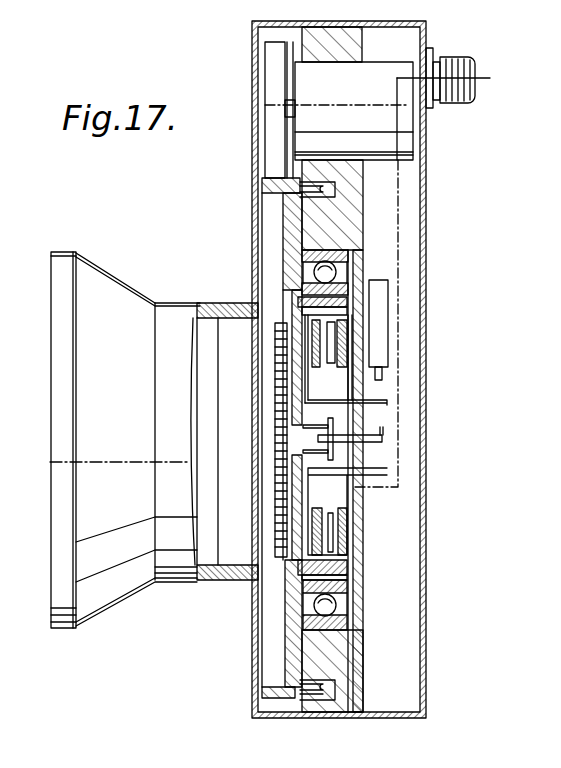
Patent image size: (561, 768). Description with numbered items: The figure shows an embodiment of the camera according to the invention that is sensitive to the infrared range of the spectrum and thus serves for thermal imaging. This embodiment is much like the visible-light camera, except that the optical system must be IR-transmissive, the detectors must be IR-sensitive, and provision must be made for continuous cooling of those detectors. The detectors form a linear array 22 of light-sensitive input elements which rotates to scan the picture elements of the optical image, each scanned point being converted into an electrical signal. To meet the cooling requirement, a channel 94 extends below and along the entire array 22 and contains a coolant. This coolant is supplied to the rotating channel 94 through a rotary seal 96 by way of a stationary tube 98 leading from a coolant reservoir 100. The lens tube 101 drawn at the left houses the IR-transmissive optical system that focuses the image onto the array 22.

The array 22 is at (256, 378).
The channel 94 is at (288, 438).
The rotary seal 96 is at (318, 424).
The stationary tube 98 is at (383, 427).
The coolant reservoir 100 is at (381, 313).
The lens tube 101 is at (103, 600).